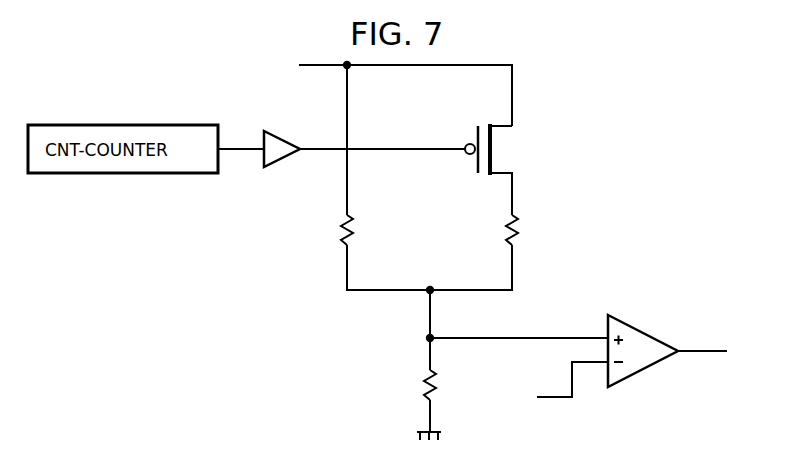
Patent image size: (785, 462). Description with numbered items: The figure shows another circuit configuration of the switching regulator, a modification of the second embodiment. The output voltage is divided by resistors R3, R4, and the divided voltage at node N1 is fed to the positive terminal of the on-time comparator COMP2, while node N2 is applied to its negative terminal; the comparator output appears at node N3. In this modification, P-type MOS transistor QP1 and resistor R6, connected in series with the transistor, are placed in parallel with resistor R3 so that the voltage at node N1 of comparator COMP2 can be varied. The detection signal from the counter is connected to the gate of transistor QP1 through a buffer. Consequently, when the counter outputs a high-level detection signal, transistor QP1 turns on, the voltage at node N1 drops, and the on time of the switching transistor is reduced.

The P-type MOS transistor QP1 is at (505, 169).
The resistor R3 is at (331, 230).
The resistor R6 is at (525, 230).
The resistor R4 is at (414, 385).
The node N1 is at (519, 326).
The node N2 is at (555, 385).
The output node N3 is at (715, 352).
The T_ON comparator COMP2 is at (642, 340).